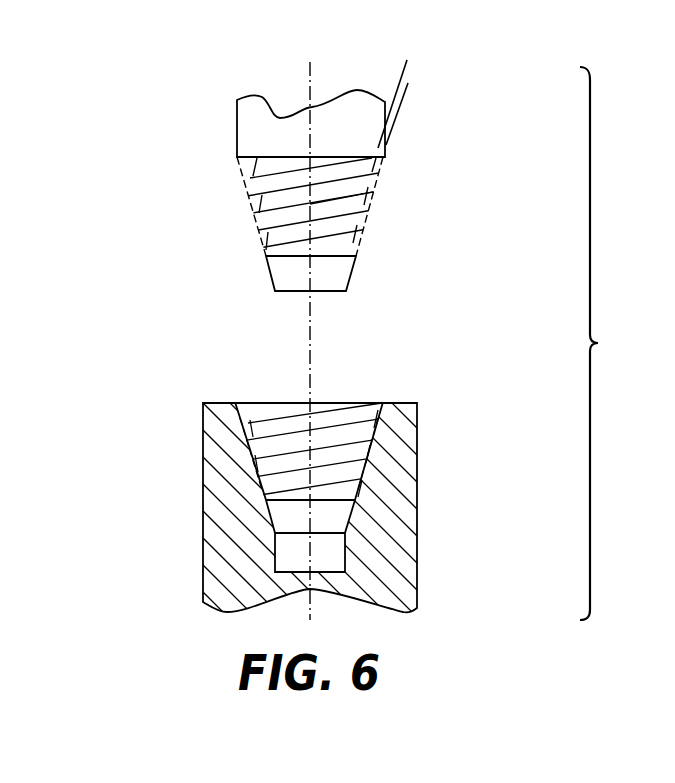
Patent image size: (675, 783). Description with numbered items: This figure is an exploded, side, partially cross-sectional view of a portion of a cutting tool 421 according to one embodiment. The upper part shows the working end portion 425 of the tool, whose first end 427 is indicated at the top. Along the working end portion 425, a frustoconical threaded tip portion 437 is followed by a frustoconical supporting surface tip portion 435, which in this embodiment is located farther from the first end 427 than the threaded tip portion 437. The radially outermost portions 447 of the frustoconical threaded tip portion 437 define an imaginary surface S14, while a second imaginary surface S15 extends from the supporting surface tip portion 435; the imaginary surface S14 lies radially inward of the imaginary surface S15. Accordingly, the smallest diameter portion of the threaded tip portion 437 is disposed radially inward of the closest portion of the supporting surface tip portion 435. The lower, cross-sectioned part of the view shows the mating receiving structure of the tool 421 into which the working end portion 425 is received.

The tool 421 is at (321, 343).
The first end 427 is at (301, 167).
The working end portion 425 is at (262, 133).
The radially outermost portions 447 is at (258, 228).
The frustoconical threaded tip portion 437 is at (347, 203).
The frustoconical supporting surface tip portion 435 is at (332, 275).
The imaginary surface S14 is at (399, 77).
The imaginary surface S15 is at (403, 102).